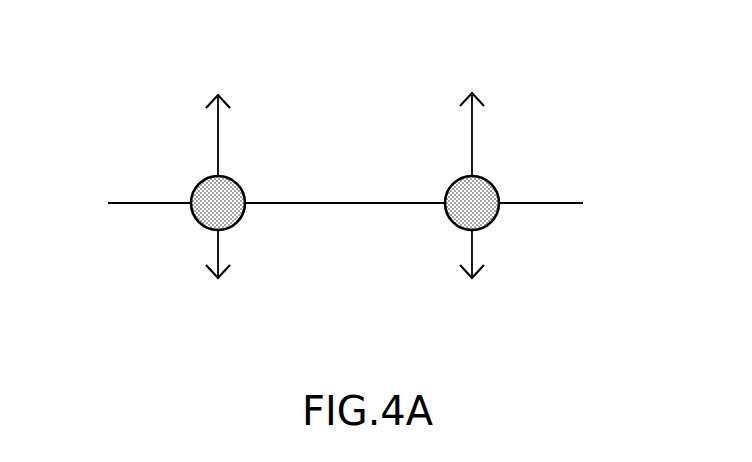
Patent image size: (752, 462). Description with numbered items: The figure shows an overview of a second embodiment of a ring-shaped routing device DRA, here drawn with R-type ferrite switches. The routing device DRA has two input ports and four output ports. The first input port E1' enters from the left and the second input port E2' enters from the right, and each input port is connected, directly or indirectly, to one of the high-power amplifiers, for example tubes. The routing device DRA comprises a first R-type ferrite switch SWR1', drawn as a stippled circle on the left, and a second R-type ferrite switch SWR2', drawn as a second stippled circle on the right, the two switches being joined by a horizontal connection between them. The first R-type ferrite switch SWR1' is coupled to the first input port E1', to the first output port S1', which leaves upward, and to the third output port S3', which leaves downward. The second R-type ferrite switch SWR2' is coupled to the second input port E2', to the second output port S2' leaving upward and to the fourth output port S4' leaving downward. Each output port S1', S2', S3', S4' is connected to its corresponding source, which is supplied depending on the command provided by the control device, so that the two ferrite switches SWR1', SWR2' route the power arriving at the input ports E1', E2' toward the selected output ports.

The ring-shaped routing device DRA is at (130, 65).
The first R-type ferrite switch SWR1' is at (165, 222).
The second R-type ferrite switch SWR2' is at (422, 224).
The first input port E1' is at (127, 203).
The second input port E2' is at (565, 204).
The first output port S1' is at (219, 118).
The second output port S2' is at (472, 117).
The third output port S3' is at (215, 271).
The fourth output port S4' is at (472, 271).